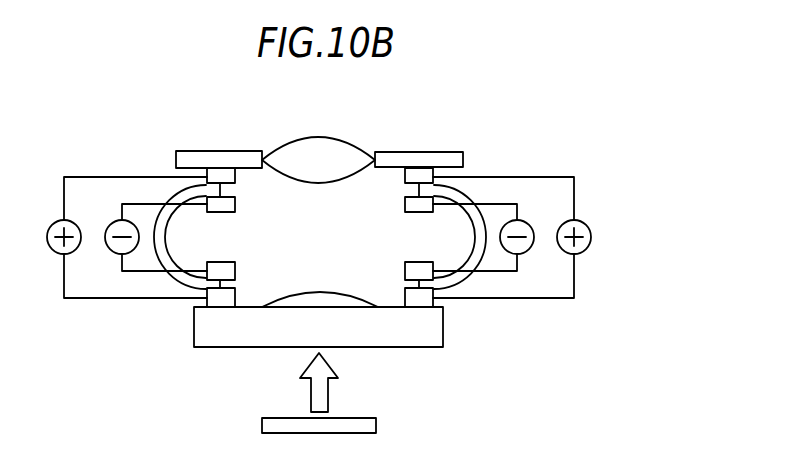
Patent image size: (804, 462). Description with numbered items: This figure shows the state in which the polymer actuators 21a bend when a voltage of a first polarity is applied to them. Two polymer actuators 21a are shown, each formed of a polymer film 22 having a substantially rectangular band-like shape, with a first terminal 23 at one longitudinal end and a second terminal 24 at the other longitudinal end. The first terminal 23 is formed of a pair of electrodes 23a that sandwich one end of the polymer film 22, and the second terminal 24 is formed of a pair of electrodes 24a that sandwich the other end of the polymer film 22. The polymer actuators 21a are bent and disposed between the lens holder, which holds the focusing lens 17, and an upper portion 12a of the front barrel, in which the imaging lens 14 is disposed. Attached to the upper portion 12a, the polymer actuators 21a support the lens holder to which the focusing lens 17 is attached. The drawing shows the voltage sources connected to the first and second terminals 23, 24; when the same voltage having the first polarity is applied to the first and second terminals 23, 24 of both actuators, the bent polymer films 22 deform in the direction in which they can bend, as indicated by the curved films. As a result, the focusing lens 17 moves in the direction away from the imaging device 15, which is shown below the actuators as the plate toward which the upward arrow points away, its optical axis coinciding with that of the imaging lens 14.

The upper portion of the front barrel 12a is at (403, 151).
The imaging lens 14 is at (328, 142).
The imaging device 15 is at (372, 425).
The focusing lens 17 is at (335, 300).
The polymer actuator 21a is at (166, 174).
The polymer film 22 is at (170, 194).
The first terminal 23 is at (181, 314).
The electrode 23a is at (235, 290).
The second terminal 24 is at (330, 128).
The electrode 24a is at (235, 181).